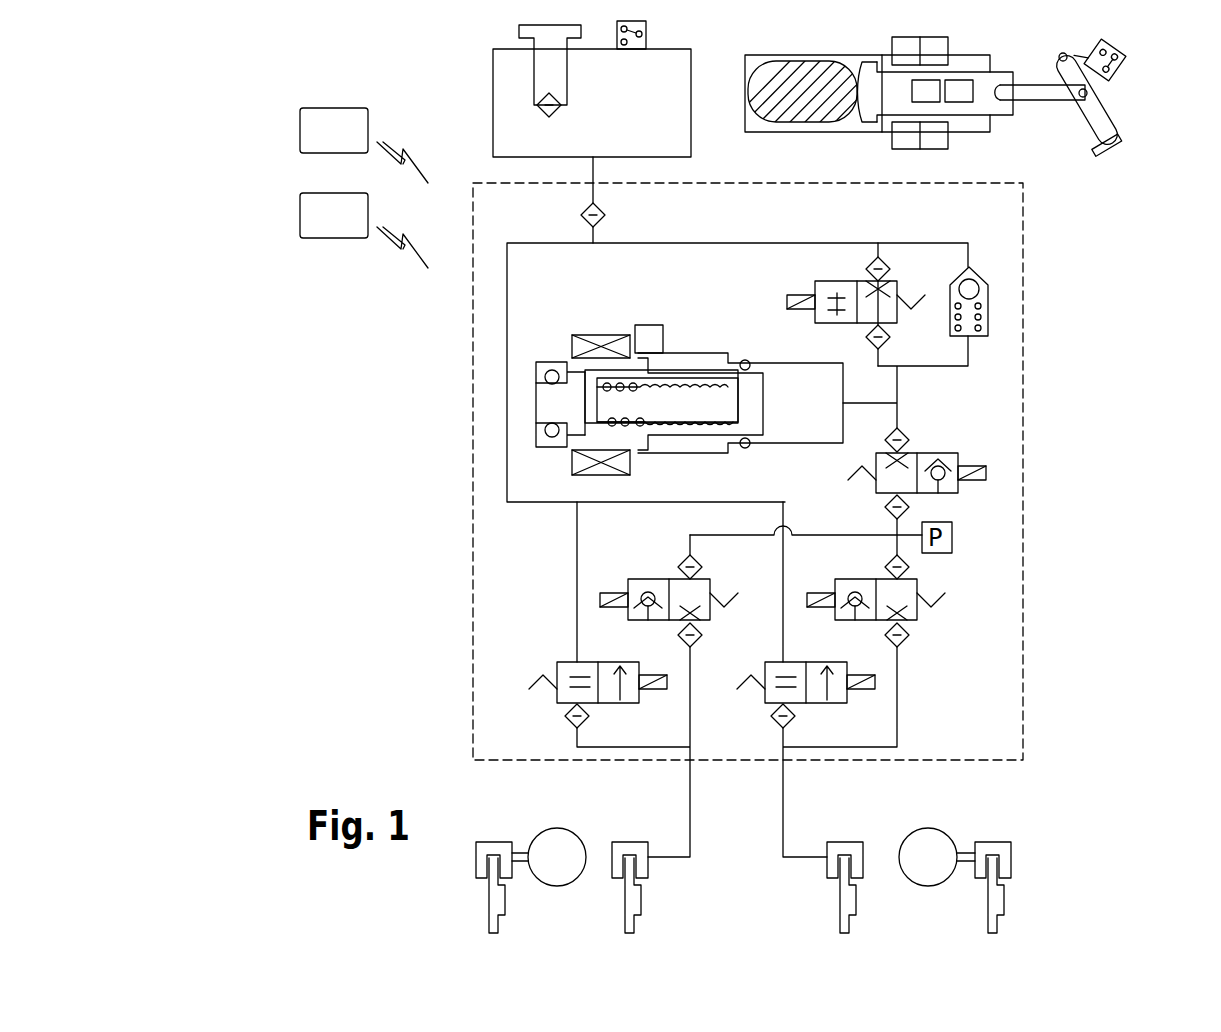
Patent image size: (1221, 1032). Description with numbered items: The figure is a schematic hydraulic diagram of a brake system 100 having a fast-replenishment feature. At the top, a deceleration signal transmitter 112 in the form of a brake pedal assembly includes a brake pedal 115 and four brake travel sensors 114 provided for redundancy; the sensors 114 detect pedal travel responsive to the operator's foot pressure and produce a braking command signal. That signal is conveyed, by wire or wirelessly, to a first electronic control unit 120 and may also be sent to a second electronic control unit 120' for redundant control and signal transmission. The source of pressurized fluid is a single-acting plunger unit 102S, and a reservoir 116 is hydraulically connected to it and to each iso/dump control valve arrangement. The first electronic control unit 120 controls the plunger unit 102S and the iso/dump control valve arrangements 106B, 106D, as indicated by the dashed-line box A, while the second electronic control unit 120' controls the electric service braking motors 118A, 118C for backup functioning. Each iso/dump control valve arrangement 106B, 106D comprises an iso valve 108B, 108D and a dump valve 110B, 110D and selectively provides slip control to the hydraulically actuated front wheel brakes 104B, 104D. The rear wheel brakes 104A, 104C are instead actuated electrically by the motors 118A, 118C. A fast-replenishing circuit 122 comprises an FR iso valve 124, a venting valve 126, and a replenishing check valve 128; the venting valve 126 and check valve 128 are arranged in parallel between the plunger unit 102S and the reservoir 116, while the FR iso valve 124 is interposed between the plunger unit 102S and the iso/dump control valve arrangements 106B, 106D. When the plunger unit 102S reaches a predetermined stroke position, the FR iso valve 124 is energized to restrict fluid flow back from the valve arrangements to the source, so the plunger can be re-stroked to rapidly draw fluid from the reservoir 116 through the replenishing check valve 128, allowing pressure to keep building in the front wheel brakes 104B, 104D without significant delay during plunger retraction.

The brake system 100 is at (314, 60).
The single-acting plunger unit 102S is at (708, 333).
The rear wheel brake 104A is at (1011, 857).
The front wheel brake 104B is at (648, 865).
The rear wheel brake 104C is at (476, 858).
The front wheel brake 104D is at (862, 863).
The iso/dump control valve arrangement 106B is at (566, 603).
The iso/dump control valve arrangement 106D is at (976, 573).
The iso valve 108B is at (660, 579).
The iso valve 108D is at (866, 579).
The dump valve 110B is at (587, 662).
The dump valve 110D is at (796, 662).
The deceleration signal transmitter 112 is at (1028, 121).
The brake travel sensor 114 is at (913, 40).
The brake pedal 115 is at (1100, 115).
The reservoir 116 is at (642, 103).
The electric service braking motor 118A is at (928, 828).
The electric service braking motor 118C is at (567, 886).
The first electronic control unit 120 is at (364, 145).
The second electronic control unit 120' is at (364, 230).
The fast-replenishing circuit 122 is at (978, 375).
The FR iso valve 124 is at (927, 452).
The venting valve 126 is at (845, 281).
The replenishing check valve 128 is at (975, 276).
The dashed-line box A is at (1023, 348).